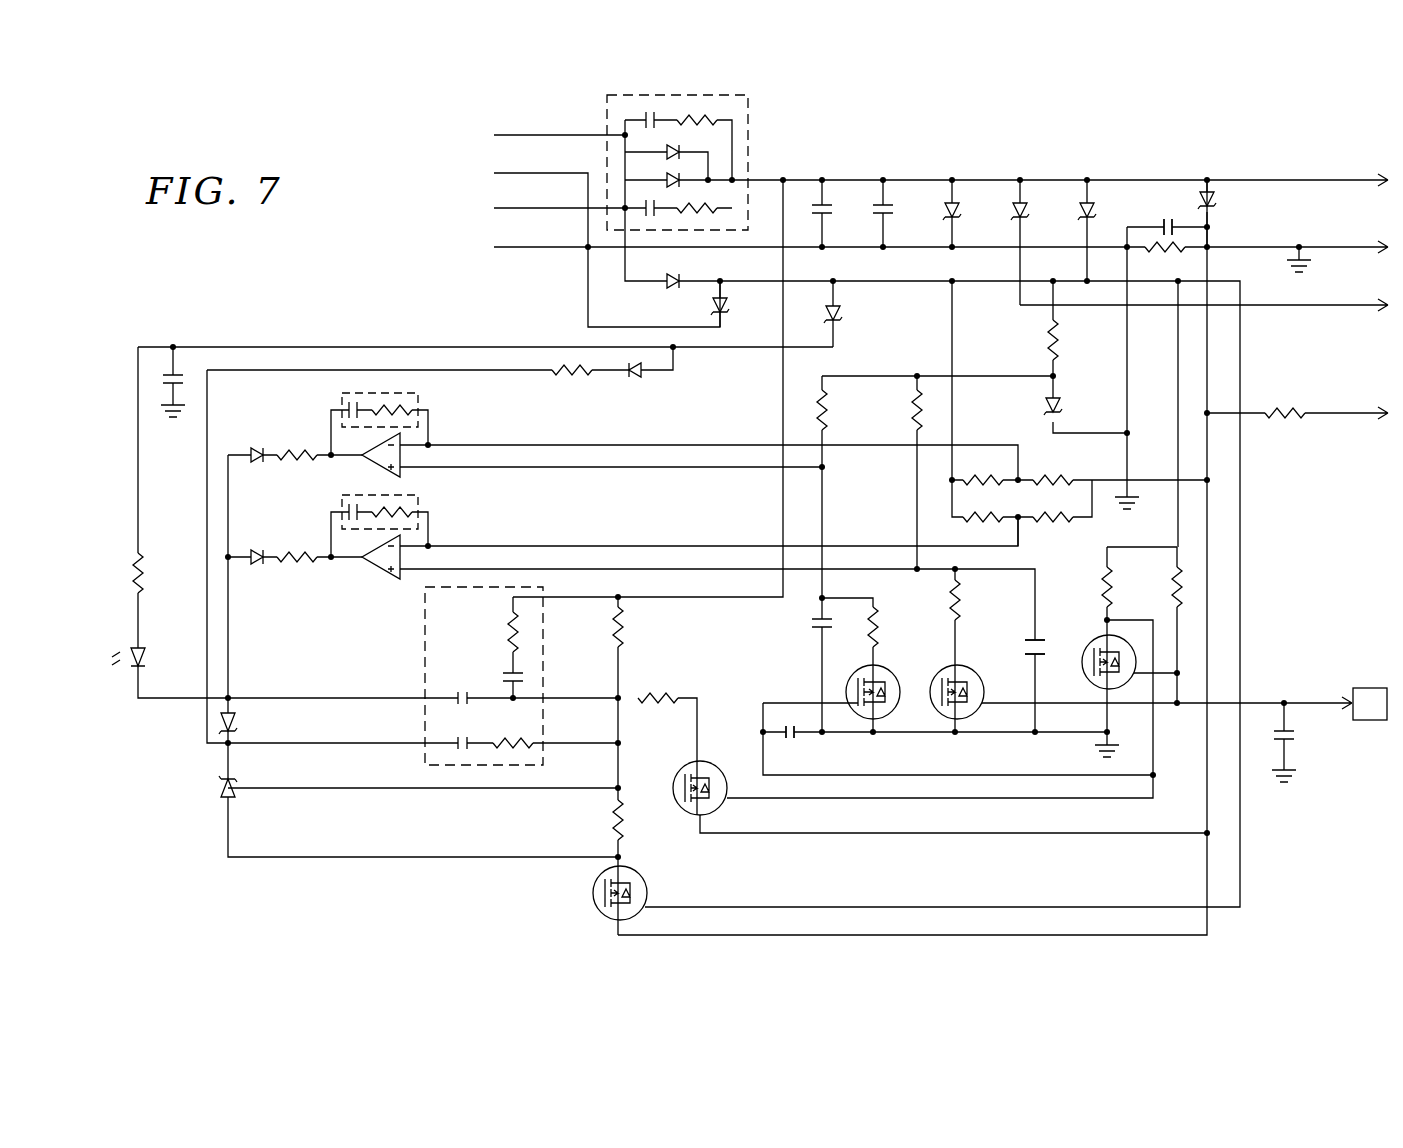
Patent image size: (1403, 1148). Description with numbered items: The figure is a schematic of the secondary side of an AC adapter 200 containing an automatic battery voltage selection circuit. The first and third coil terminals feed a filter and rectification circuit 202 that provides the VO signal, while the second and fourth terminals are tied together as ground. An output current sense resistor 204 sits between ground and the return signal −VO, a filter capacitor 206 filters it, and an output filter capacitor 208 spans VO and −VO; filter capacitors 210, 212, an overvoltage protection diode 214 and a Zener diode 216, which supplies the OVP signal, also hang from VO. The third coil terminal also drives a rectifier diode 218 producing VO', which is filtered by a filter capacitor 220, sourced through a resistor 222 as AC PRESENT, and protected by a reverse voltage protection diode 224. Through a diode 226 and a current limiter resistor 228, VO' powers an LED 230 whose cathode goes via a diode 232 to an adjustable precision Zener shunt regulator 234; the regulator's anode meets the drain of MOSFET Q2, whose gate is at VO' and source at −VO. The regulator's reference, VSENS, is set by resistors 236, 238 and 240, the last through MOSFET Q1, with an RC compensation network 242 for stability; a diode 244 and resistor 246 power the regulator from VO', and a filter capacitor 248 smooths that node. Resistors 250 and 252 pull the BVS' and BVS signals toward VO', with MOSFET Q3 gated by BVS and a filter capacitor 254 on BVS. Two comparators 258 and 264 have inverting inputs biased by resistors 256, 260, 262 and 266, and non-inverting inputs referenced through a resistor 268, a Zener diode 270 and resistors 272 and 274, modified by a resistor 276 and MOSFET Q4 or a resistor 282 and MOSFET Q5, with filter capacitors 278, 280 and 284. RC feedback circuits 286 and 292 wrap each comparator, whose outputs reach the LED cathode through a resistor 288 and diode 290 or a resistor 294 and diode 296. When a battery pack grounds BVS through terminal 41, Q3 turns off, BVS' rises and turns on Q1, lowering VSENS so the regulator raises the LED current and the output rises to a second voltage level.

The AC adapter 200 is at (1010, 94).
The filter and rectification circuit 202 is at (722, 95).
The output current sense resistor 204 is at (1175, 248).
The filter capacitor 206 is at (1168, 218).
The output filter capacitor 208 is at (1210, 195).
The filter capacitor 210 is at (822, 205).
The filter capacitor 212 is at (883, 205).
The overvoltage protection diode 214 is at (955, 205).
The Zener diode 216 is at (1023, 205).
The rectifier diode 218 is at (665, 290).
The filter capacitor 220 is at (728, 308).
The resistor 222 is at (1285, 418).
The reverse voltage protection diode 224 is at (1090, 205).
The diode 226 is at (846, 317).
The current limiter resistor 228 is at (133, 578).
The LED 230 is at (130, 650).
The diode 232 is at (240, 721).
The adjustable precision Zener shunt regulator 234 is at (220, 788).
The resistor 236 is at (612, 825).
The resistor 238 is at (630, 640).
The resistor 240 is at (652, 690).
The RC compensation network 242 is at (424, 668).
The diode 244 is at (635, 382).
The resistor 246 is at (572, 380).
The filter capacitor 248 is at (170, 362).
The resistor 250 is at (1102, 590).
The resistor 252 is at (1170, 590).
The filter capacitor 254 is at (1292, 738).
The resistor 256 is at (1055, 475).
The comparator 258 is at (372, 467).
The resistor 260 is at (990, 485).
The resistor 262 is at (1055, 525).
The comparator 264 is at (372, 573).
The resistor 266 is at (985, 522).
The resistor 268 is at (1050, 345).
The Zener diode 270 is at (1062, 410).
The resistor 272 is at (826, 410).
The resistor 274 is at (914, 412).
The resistor 276 is at (878, 628).
The filter capacitor 278 is at (790, 740).
The filter capacitor 280 is at (812, 633).
The resistor 282 is at (962, 623).
The filter capacitor 284 is at (1030, 647).
The RC feedback circuit 286 is at (422, 400).
The resistor 288 is at (300, 448).
The diode 290 is at (255, 465).
The RC feedback circuit 292 is at (422, 502).
The resistor 294 is at (298, 566).
The diode 296 is at (255, 567).
The terminal 41 is at (1378, 686).
The n-channel enhancement MOSFET Q1 is at (682, 788).
The n-channel enhancement MOSFET Q2 is at (601, 893).
The n-channel enhancement MOSFET Q3 is at (1093, 662).
The n-channel enhancement MOSFET Q4 is at (861, 693).
The n-channel enhancement MOSFET Q5 is at (944, 693).